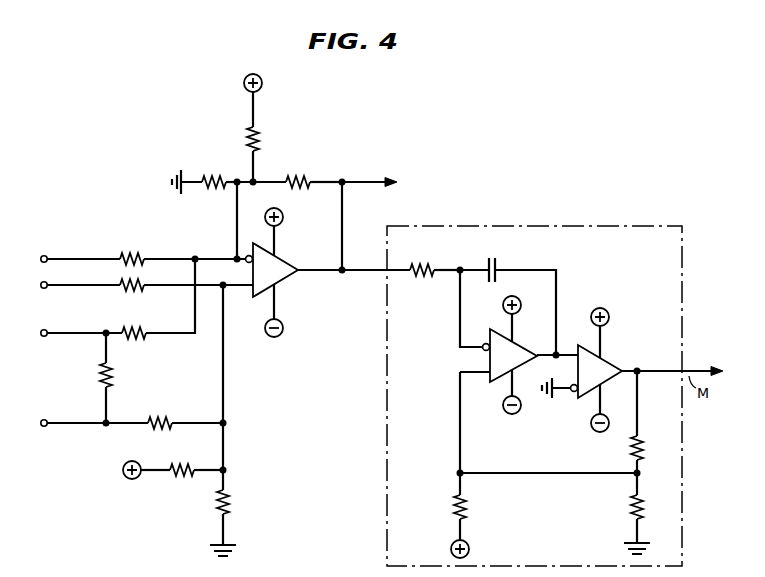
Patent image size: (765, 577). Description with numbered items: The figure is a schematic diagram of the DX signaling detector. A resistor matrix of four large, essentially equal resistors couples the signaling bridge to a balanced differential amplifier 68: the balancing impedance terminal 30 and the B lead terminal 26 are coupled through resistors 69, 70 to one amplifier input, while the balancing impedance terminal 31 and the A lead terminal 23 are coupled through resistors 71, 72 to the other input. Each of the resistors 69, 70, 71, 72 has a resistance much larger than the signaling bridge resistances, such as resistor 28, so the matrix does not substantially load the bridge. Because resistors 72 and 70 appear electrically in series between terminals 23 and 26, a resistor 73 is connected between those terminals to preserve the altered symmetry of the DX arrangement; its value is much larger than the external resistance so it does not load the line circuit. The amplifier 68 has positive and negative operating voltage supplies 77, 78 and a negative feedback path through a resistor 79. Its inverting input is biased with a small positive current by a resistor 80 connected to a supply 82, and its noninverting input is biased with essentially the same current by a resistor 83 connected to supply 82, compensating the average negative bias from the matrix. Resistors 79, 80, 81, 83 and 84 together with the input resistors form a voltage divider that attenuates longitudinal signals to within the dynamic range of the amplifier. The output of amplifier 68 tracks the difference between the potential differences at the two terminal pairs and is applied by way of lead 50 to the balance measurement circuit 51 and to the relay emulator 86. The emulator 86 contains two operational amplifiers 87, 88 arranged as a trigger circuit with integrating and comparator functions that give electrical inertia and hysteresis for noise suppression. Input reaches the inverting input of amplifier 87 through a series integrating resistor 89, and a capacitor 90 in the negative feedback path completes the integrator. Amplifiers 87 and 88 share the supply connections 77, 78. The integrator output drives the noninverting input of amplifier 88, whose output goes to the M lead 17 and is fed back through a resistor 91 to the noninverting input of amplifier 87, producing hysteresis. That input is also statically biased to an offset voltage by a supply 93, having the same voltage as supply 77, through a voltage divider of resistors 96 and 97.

The M lead 17 is at (690, 367).
The A lead terminal 23 is at (73, 334).
The B lead terminal 26 is at (86, 424).
The resistor 28 is at (136, 470).
The balancing impedance terminal 30 is at (72, 286).
The balancing impedance terminal 31 is at (72, 260).
The lead 50 is at (372, 178).
The balance measurement circuit 51 is at (499, 181).
The balanced differential amplifier 68 is at (282, 270).
The resistor 69 is at (186, 296).
The resistor 70 is at (185, 412).
The resistor 71 is at (178, 249).
The resistor 72 is at (158, 310).
The resistor 73 is at (96, 378).
The positive operating voltage supply 77 is at (447, 283).
The negative operating voltage supply 78 is at (437, 358).
The resistor 79 is at (314, 171).
The resistor 80 is at (264, 154).
The resistor 81 is at (219, 172).
The supply 82 is at (264, 100).
The resistor 83 is at (196, 459).
The resistor 84 is at (233, 523).
The relay emulator 86 is at (650, 226).
The operational amplifier 87 is at (519, 355).
The operational amplifier 88 is at (589, 371).
The integrating circuit resistor 89 is at (435, 260).
The capacitor 90 is at (508, 299).
The resistor 91 is at (648, 454).
The supply 93 is at (470, 549).
The resistor 96 is at (448, 517).
The resistor 97 is at (644, 524).